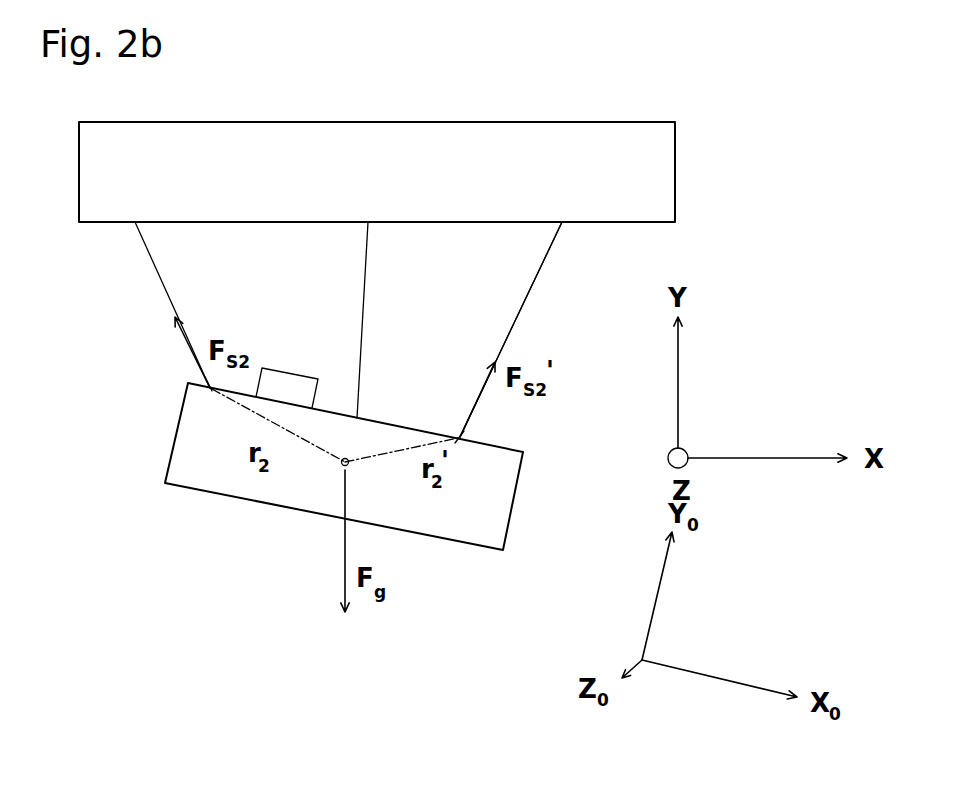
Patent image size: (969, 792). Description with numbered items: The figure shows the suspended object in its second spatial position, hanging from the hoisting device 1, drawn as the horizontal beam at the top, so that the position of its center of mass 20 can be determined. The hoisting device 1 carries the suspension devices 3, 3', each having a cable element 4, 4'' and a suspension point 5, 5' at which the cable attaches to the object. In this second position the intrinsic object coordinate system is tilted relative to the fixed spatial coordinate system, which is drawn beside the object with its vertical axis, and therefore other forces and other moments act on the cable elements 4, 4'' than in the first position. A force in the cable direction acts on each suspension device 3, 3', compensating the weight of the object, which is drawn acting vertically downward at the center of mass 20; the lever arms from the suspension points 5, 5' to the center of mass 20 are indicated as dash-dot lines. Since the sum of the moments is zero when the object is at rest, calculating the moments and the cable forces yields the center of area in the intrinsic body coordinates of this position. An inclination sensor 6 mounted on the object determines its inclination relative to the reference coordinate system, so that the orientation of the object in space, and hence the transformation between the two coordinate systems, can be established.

The hoisting device 1 is at (432, 118).
The suspension device 3 is at (128, 305).
The suspension device 3' is at (554, 329).
The cable element 4 is at (138, 305).
The cable element 4'' is at (499, 329).
The suspension point 5 is at (158, 374).
The suspension point 5' is at (512, 441).
The inclination sensor 6 is at (290, 357).
The center of mass 20 is at (361, 474).